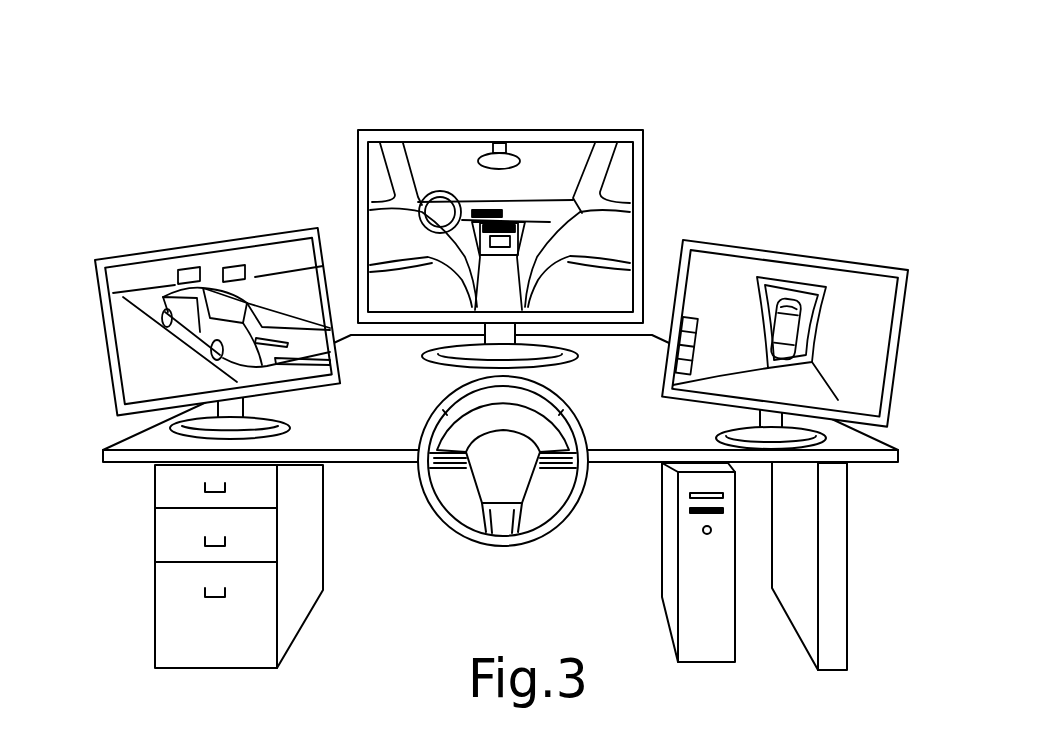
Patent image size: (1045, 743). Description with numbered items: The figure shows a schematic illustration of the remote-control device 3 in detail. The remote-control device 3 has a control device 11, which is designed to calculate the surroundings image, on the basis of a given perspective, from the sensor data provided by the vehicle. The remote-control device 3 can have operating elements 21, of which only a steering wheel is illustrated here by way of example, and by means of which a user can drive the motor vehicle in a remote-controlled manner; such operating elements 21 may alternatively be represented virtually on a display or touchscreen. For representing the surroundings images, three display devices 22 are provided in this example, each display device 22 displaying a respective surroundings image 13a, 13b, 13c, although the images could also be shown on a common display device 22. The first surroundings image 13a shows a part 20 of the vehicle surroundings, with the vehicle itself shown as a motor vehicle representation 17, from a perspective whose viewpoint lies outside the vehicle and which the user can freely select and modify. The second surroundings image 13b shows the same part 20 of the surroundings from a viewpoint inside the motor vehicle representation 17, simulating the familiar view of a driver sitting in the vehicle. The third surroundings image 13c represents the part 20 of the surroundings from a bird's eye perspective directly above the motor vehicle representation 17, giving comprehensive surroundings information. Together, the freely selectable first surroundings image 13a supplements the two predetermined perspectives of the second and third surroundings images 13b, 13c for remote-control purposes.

The remote-control device 3 is at (199, 97).
The control device 11 is at (723, 597).
The first surroundings image 13a is at (147, 286).
The second surroundings image 13b is at (421, 150).
The third surroundings image 13c is at (724, 272).
The motor vehicle representation 17 is at (262, 283).
The part of the surroundings 20 is at (132, 352).
The operating elements 21 is at (575, 426).
The display device 22 is at (205, 246).